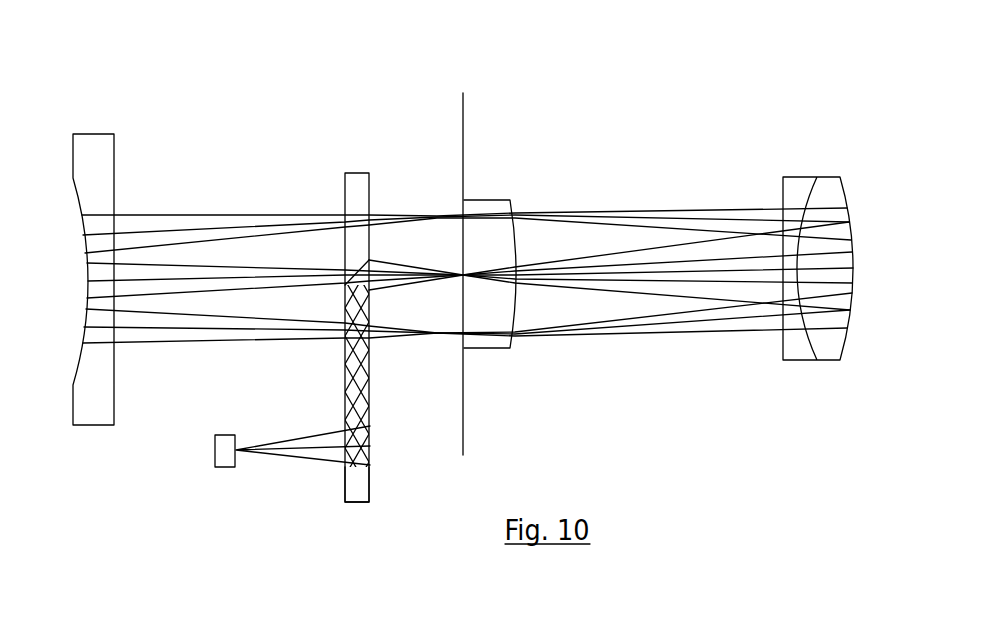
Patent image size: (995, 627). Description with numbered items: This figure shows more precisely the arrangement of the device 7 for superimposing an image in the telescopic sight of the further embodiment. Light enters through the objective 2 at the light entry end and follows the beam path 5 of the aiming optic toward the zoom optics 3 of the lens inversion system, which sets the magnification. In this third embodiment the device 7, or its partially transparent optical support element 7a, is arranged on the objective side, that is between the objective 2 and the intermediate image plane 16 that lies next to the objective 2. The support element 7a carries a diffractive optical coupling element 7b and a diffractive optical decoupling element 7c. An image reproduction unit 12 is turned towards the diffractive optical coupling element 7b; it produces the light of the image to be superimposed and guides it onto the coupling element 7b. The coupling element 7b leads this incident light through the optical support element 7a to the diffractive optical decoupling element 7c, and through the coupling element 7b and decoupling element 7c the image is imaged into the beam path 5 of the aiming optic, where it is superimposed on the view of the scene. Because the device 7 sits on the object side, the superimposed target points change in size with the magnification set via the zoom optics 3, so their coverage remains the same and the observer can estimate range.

The objective 2 is at (118, 123).
The device for superimposing an image 7 is at (330, 138).
The partially transparent optical support element 7a is at (356, 489).
The diffractive optical coupling element 7b is at (347, 470).
The diffractive optical decoupling element 7c is at (369, 260).
The intermediate image plane 16 is at (473, 93).
The zoom optics 3 is at (787, 165).
The beam path 5 is at (648, 352).
The image reproduction unit 12 is at (223, 453).